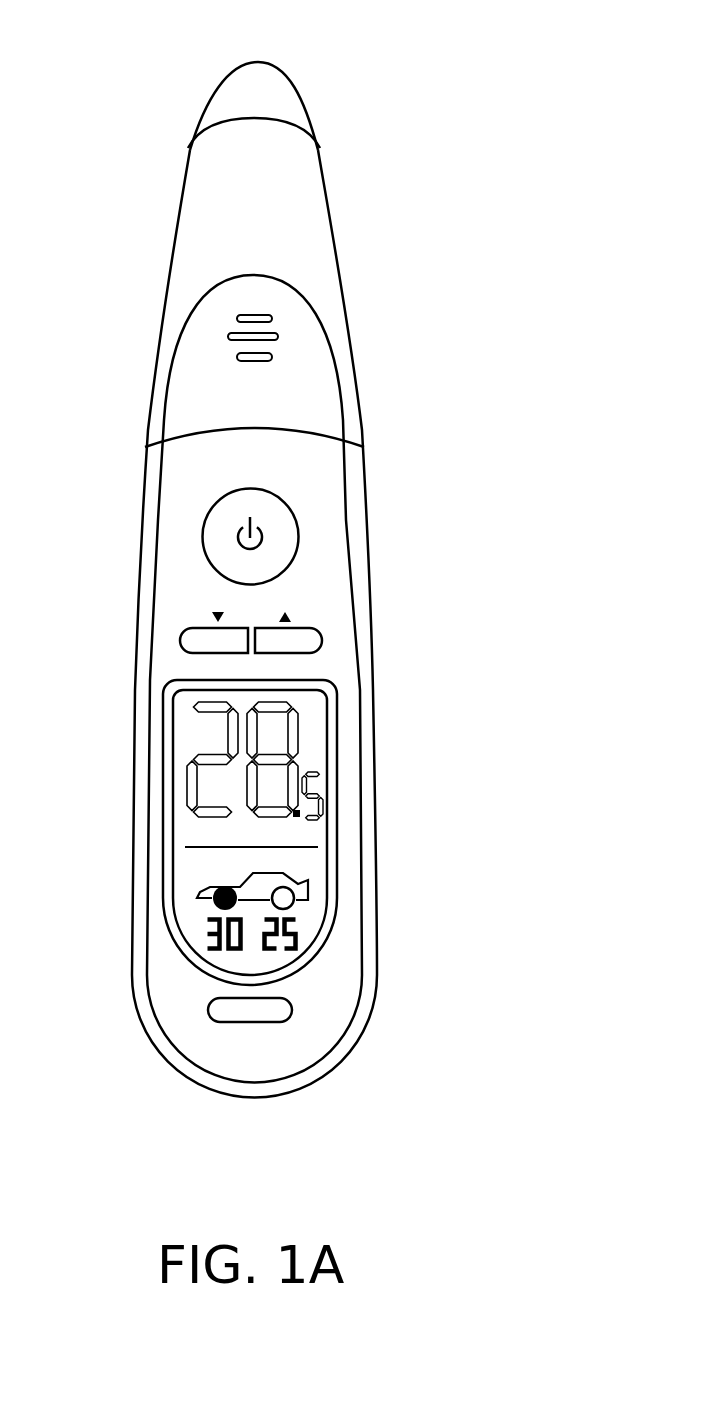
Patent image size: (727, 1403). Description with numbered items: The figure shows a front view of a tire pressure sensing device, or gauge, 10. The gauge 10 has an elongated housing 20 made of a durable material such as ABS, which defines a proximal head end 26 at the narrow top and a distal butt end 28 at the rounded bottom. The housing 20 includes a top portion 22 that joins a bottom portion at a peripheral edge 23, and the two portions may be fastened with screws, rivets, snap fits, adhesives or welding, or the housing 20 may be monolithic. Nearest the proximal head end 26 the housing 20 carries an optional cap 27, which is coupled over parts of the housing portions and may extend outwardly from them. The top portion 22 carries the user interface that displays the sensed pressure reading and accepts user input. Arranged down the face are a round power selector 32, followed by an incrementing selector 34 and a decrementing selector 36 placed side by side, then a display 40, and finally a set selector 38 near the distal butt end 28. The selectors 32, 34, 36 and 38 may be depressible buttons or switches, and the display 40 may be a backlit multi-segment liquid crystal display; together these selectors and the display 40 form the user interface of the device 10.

The pressure sensing device 10 is at (446, 151).
The housing 20 is at (242, 232).
The top portion 22 is at (178, 561).
The peripheral edge 23 is at (366, 537).
The proximal head end 26 is at (241, 70).
The cap 27 is at (278, 100).
The distal butt end 28 is at (182, 1025).
The power selector 32 is at (262, 567).
The incrementing selector 34 is at (298, 641).
The decrementing selector 36 is at (182, 642).
The set selector 38 is at (277, 1010).
The display 40 is at (310, 843).